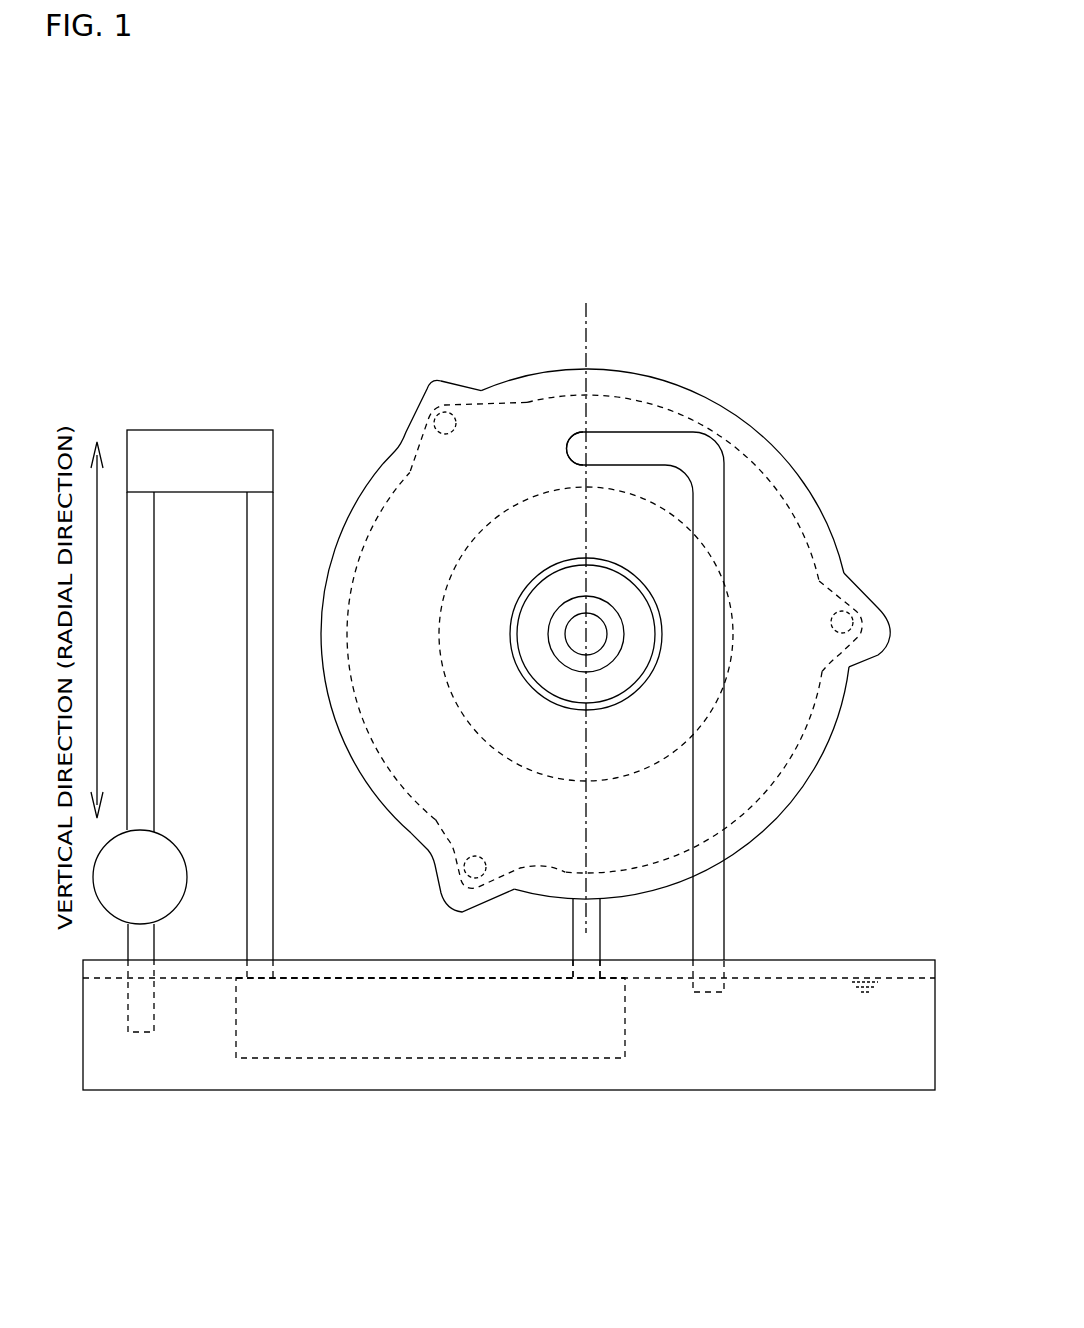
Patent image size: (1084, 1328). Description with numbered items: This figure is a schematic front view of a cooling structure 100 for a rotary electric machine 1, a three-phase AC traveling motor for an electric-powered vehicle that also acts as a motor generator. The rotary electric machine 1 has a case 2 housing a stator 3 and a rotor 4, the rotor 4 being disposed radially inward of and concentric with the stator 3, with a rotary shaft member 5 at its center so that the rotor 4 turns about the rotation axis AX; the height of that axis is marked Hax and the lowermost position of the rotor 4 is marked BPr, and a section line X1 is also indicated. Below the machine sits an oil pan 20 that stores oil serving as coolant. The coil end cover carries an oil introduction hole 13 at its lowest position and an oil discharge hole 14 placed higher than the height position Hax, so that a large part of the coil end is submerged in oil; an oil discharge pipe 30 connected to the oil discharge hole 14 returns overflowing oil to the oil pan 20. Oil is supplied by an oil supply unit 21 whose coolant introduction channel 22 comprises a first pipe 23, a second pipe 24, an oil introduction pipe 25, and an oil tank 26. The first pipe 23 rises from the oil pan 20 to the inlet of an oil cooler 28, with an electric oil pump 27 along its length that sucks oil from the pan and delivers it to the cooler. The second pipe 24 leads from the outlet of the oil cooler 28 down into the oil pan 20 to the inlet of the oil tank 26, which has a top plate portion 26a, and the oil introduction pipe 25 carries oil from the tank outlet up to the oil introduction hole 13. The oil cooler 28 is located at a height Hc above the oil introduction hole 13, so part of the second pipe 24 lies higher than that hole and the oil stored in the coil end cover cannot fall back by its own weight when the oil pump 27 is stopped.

The rotary electric machine 1 is at (448, 358).
The case 2 is at (795, 468).
The stator 3 is at (788, 723).
The rotor 4 is at (557, 483).
The rotary shaft member 5 is at (562, 600).
The oil introduction hole 13 is at (573, 903).
The oil discharge hole 14 is at (597, 457).
The oil pan 20 is at (843, 960).
The oil supply unit 21 is at (121, 413).
The coolant introduction channel 22 is at (297, 930).
The first pipe 23 is at (154, 585).
The second pipe 24 is at (247, 700).
The oil introduction pipe 25 is at (573, 943).
The oil tank 26 is at (237, 1037).
The top plate portion 26a is at (367, 988).
The oil pump 27 is at (160, 833).
The oil cooler 28 is at (160, 430).
The oil discharge pipe 30 is at (670, 431).
The cooling structure 100 is at (902, 1238).
The cross-section line X1 is at (586, 303).
The rotation axis AX is at (587, 633).
The height position of the rotation axis Hax is at (586, 634).
The lowermost position of the rotor BPr is at (566, 782).
The height position of the oil cooler Hc is at (273, 492).